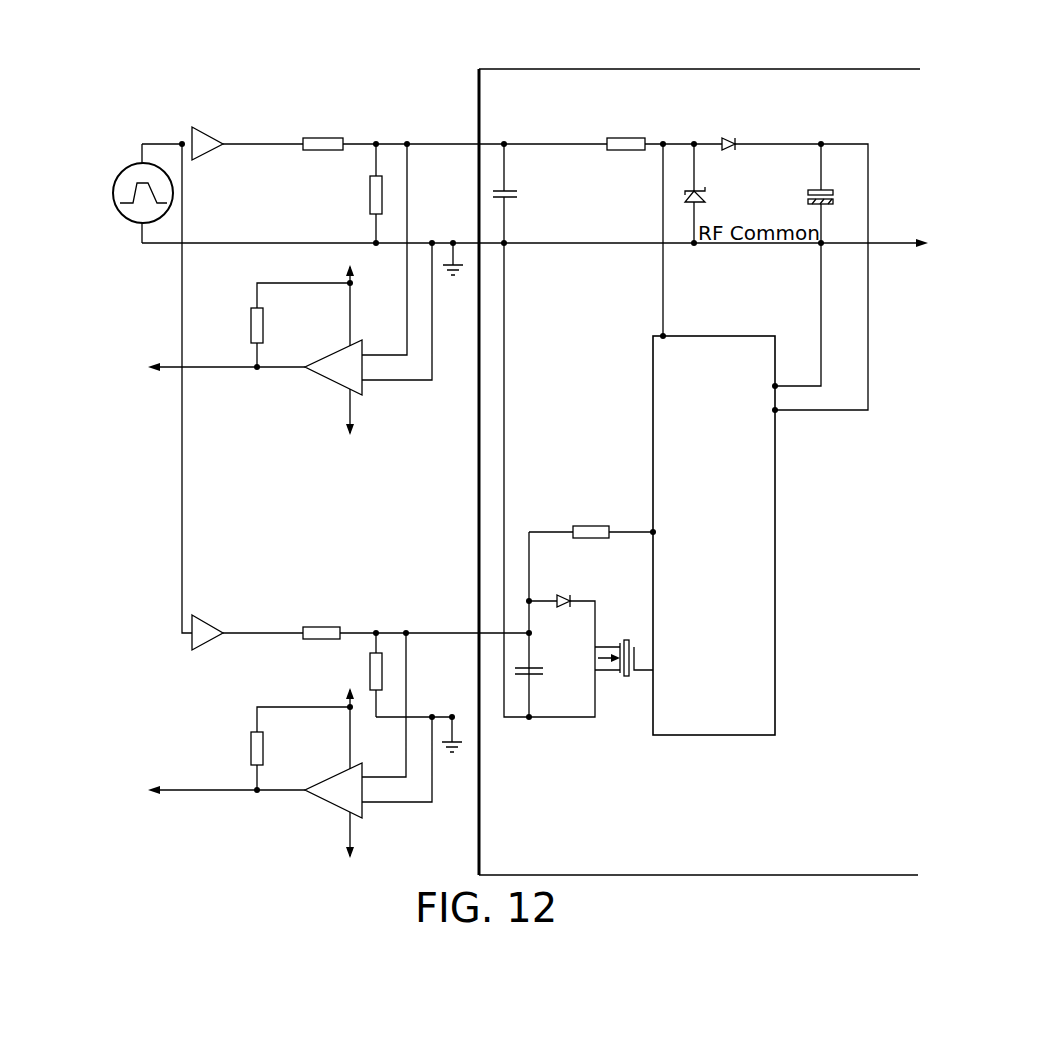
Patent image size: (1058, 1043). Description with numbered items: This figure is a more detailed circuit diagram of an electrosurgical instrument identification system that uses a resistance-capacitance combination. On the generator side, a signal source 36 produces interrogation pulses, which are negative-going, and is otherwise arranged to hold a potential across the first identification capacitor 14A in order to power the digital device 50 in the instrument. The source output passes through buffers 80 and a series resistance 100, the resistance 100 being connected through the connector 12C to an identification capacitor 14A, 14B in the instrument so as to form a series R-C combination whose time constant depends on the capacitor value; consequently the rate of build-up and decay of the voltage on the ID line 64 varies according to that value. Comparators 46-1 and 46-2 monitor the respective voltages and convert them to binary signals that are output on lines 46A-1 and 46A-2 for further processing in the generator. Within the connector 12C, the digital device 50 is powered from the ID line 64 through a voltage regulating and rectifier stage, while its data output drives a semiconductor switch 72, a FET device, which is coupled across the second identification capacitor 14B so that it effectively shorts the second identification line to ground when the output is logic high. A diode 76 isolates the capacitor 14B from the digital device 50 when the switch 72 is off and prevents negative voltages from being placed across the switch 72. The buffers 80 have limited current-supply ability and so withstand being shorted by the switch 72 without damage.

The connector 12C is at (888, 68).
The signal source 36 is at (113, 193).
The buffers 80 is at (212, 127).
The series resistance 100 is at (322, 138).
The ID line 64 is at (567, 140).
The first identification capacitor 14A is at (520, 194).
The second identification capacitor 14B is at (545, 668).
The comparator 46-1 is at (330, 382).
The comparator 46-2 is at (330, 805).
The output line 46A-1 is at (218, 370).
The output line 46A-2 is at (183, 788).
The diode 76 is at (565, 597).
The switch 72 is at (622, 640).
The digital device 50 is at (777, 718).